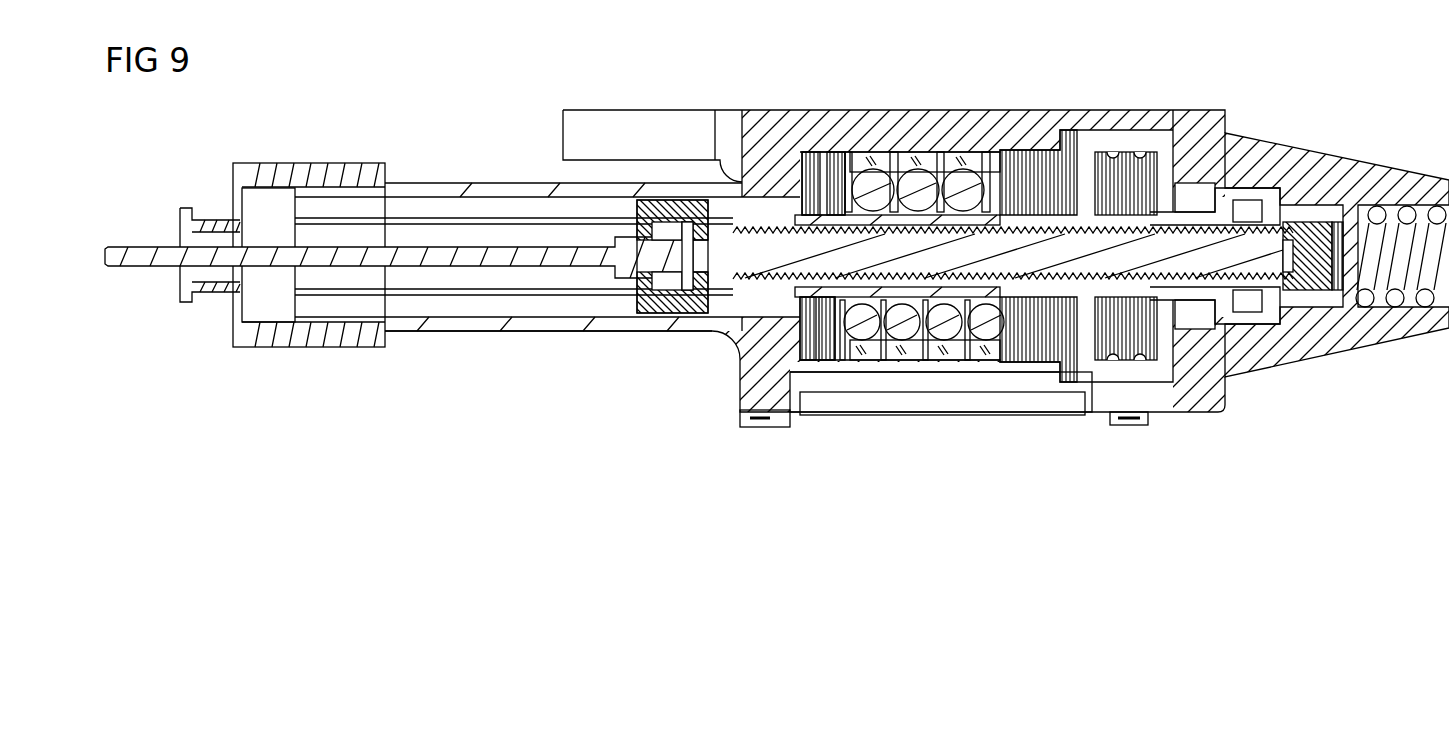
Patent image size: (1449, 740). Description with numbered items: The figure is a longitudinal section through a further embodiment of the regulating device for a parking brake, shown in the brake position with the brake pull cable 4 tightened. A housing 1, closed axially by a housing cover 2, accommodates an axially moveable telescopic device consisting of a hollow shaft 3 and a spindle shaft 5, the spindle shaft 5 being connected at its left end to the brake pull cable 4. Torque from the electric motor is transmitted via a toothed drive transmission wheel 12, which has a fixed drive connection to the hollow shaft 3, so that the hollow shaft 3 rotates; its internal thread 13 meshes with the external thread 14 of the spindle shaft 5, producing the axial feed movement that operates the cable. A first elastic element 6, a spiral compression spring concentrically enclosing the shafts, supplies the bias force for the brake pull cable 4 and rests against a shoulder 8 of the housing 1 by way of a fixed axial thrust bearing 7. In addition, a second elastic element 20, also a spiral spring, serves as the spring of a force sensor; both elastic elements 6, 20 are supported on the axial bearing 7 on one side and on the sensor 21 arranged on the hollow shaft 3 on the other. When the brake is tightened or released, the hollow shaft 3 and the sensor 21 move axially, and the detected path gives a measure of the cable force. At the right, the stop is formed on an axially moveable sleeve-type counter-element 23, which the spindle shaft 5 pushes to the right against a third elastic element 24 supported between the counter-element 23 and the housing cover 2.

The housing 1 is at (775, 108).
The housing cover 2 is at (1305, 150).
The hollow shaft 3 is at (1196, 205).
The brake pull cable 4 is at (140, 250).
The spindle shaft 5 is at (722, 292).
The first elastic element 6 is at (905, 160).
The axial thrust bearing 7 is at (818, 365).
The shoulder 8 is at (800, 335).
The drive transmission wheel 12 is at (1133, 152).
The internal thread 13 is at (928, 280).
The external thread 14 is at (745, 283).
The second elastic element 20 is at (858, 150).
The sensor 21 is at (1073, 130).
The counter-element 23 is at (1325, 330).
The third elastic element 24 is at (1400, 312).